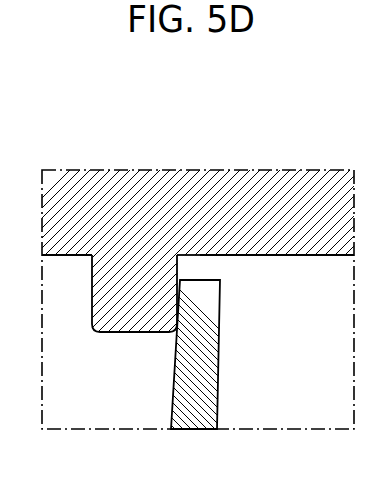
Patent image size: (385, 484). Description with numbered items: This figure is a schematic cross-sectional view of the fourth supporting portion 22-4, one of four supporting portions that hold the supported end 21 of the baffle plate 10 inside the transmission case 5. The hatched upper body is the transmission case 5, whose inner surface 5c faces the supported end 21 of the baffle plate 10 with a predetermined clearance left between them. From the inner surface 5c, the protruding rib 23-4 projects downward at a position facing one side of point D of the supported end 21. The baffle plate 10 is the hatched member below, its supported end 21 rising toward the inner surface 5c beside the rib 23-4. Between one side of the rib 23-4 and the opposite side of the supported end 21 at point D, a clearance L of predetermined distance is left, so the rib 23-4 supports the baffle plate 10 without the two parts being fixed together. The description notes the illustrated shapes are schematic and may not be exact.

The transmission case 5 is at (57, 258).
The inner surface 5c is at (285, 256).
The fourth supporting portion 22-4 is at (265, 121).
The protruding rib 23-4 is at (92, 300).
The supported end 21 is at (204, 280).
The baffle plate 10 is at (219, 405).
The clearance L is at (170, 339).